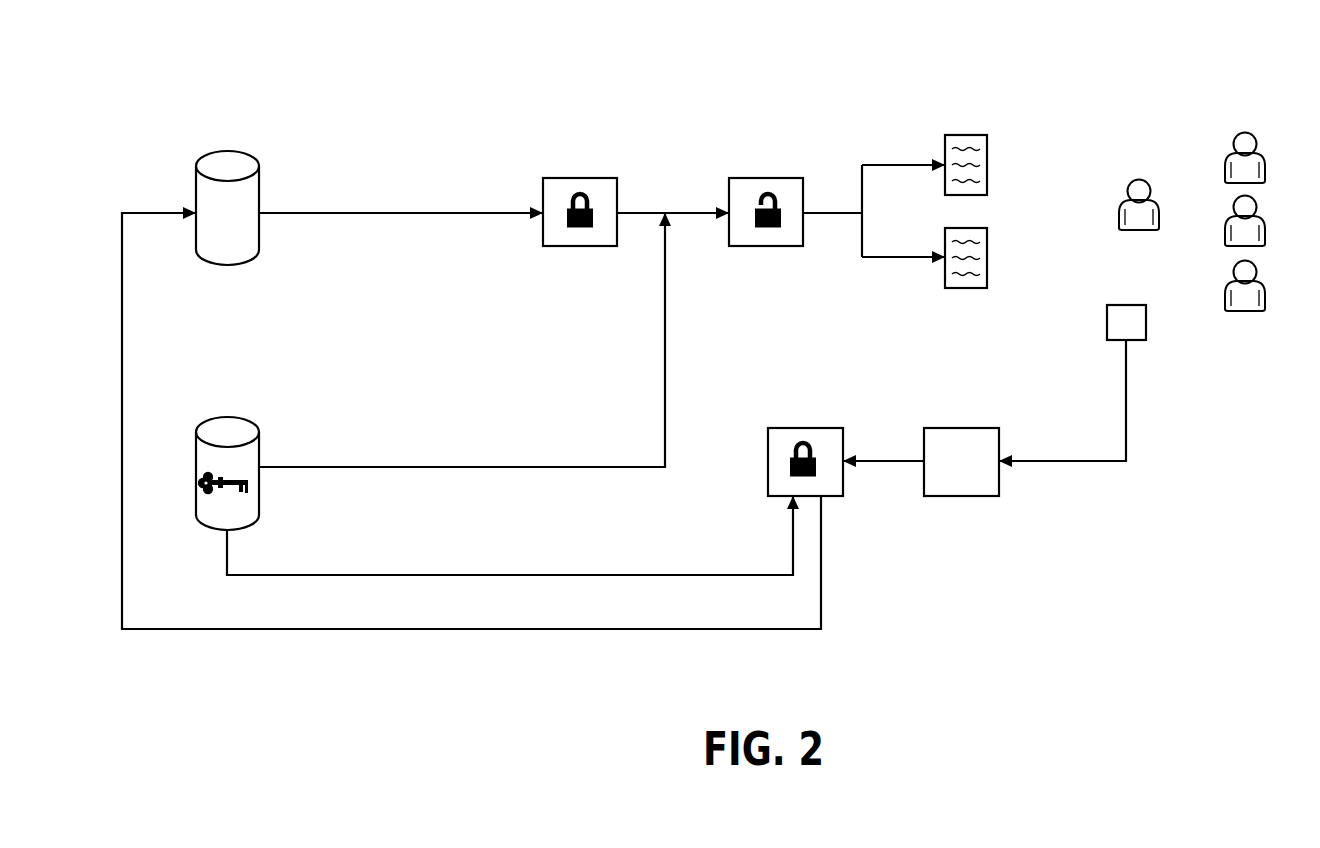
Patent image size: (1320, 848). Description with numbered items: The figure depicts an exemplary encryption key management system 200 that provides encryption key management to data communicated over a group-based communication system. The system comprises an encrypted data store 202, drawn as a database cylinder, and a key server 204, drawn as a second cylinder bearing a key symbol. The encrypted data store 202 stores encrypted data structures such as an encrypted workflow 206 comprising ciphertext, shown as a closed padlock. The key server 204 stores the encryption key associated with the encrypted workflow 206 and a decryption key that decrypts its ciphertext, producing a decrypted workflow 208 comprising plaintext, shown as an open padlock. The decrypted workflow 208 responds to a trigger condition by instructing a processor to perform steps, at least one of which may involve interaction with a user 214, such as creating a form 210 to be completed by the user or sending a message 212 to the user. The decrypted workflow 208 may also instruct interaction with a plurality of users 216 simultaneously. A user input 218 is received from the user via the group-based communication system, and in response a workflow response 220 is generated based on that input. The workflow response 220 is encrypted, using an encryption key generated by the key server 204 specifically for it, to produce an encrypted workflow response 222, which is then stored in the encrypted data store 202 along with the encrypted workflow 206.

The encryption key management system 200 is at (716, 50).
The encrypted data store 202 is at (235, 151).
The key server 204 is at (240, 416).
The encrypted workflow 206 is at (593, 178).
The decrypted workflow 208 is at (781, 178).
The form 210 is at (988, 156).
The message 212 is at (988, 243).
The user 214 is at (1142, 178).
The plurality of users 216 is at (1250, 131).
The user input 218 is at (1107, 320).
The workflow response 220 is at (957, 428).
The encrypted workflow response 222 is at (812, 428).